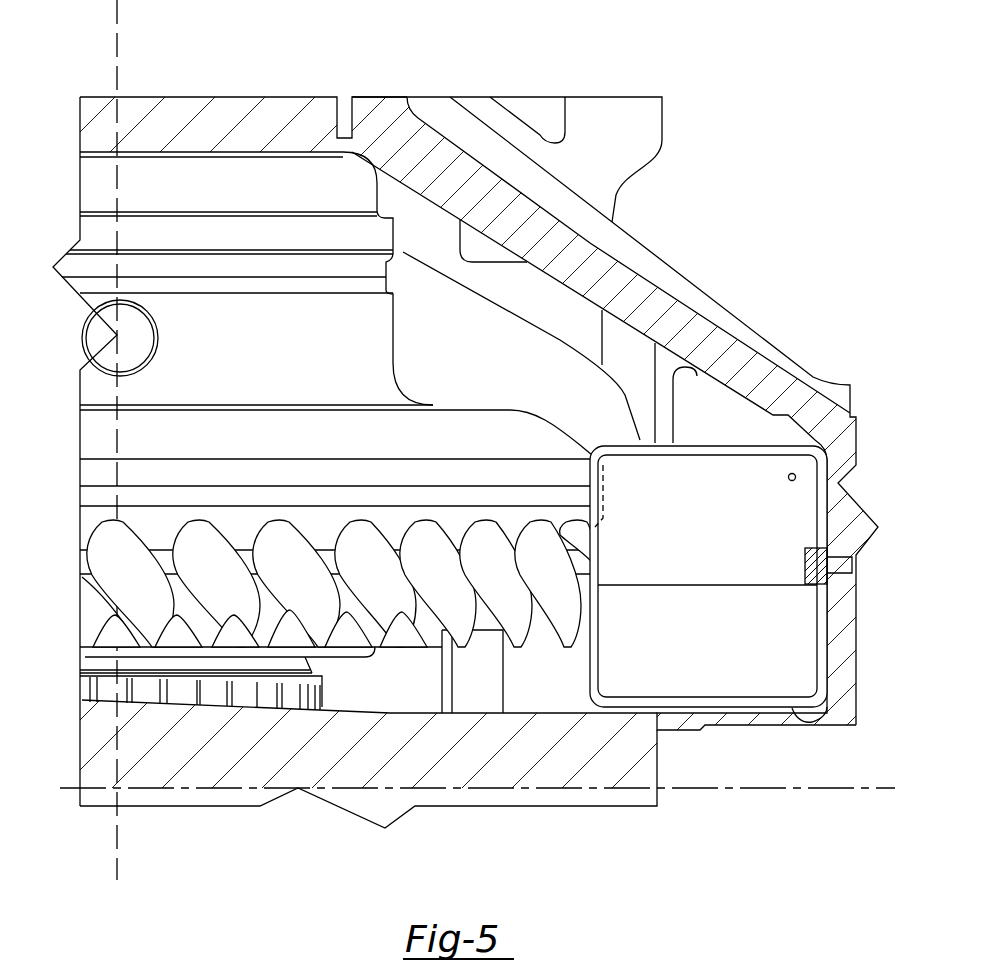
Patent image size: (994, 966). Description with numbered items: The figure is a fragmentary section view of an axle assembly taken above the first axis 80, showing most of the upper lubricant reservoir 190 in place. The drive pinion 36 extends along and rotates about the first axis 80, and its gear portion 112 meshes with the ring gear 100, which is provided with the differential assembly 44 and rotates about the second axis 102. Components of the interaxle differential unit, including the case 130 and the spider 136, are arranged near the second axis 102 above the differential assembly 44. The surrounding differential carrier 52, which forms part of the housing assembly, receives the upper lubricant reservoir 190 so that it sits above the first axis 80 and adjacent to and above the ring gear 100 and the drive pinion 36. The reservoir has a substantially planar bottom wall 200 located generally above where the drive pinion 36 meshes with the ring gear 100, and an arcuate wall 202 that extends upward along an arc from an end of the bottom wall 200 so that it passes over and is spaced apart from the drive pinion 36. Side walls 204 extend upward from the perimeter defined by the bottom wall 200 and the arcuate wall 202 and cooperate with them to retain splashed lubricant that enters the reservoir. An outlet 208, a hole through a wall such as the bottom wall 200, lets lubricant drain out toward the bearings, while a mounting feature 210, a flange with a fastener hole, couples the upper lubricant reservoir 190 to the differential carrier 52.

The second axis 102 is at (117, 4).
The differential assembly 44 is at (243, 83).
The case 130 is at (207, 152).
The differential carrier 52 is at (642, 272).
The spider 136 is at (110, 362).
The ring gear 100 is at (88, 524).
The drive pinion 36 is at (368, 774).
The gear portion 112 is at (527, 697).
The upper lubricant reservoir 190 is at (761, 509).
The bottom wall 200 is at (703, 530).
The arcuate wall 202 is at (708, 643).
The side walls 204 is at (648, 467).
The outlet 208 is at (788, 478).
The mounting feature 210 is at (816, 548).
The first axis 80 is at (878, 790).